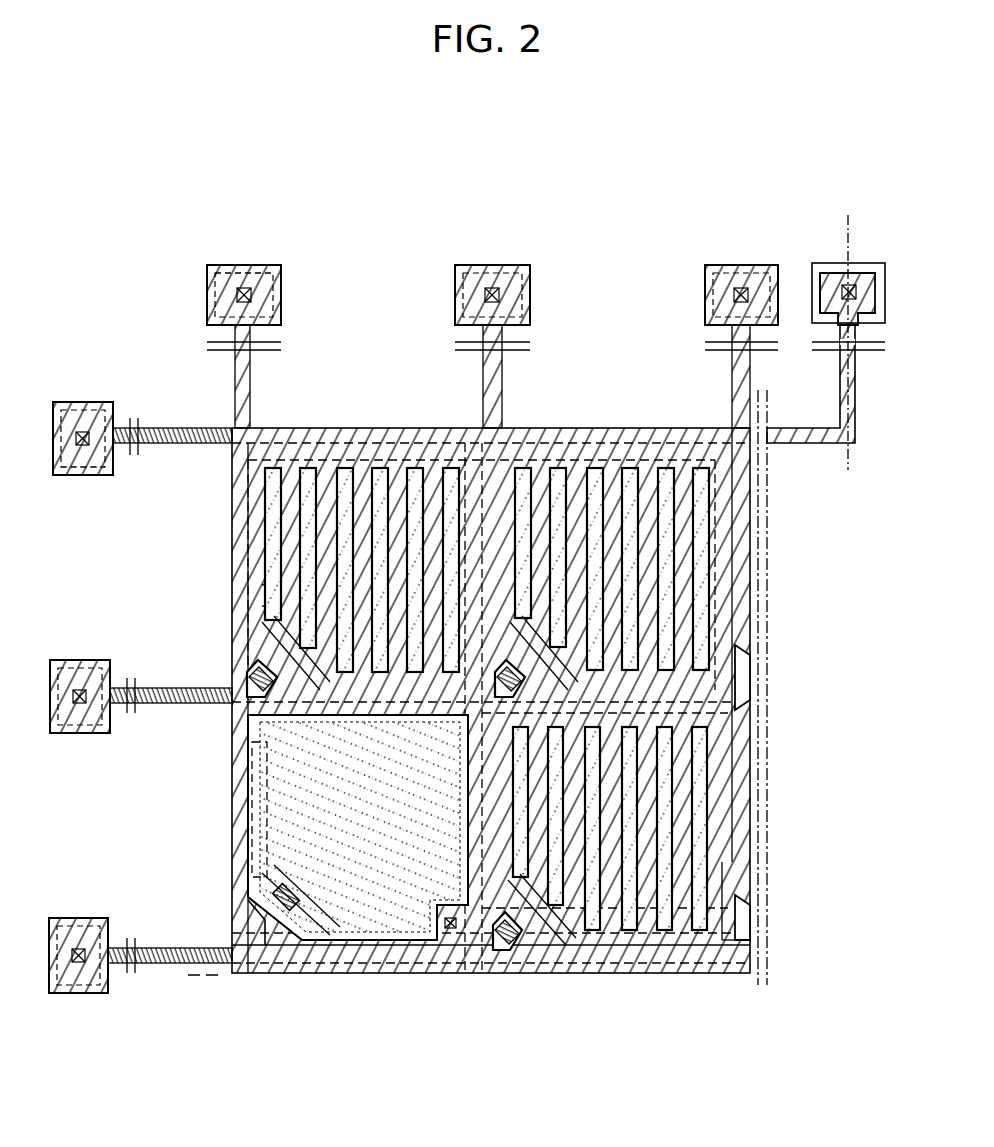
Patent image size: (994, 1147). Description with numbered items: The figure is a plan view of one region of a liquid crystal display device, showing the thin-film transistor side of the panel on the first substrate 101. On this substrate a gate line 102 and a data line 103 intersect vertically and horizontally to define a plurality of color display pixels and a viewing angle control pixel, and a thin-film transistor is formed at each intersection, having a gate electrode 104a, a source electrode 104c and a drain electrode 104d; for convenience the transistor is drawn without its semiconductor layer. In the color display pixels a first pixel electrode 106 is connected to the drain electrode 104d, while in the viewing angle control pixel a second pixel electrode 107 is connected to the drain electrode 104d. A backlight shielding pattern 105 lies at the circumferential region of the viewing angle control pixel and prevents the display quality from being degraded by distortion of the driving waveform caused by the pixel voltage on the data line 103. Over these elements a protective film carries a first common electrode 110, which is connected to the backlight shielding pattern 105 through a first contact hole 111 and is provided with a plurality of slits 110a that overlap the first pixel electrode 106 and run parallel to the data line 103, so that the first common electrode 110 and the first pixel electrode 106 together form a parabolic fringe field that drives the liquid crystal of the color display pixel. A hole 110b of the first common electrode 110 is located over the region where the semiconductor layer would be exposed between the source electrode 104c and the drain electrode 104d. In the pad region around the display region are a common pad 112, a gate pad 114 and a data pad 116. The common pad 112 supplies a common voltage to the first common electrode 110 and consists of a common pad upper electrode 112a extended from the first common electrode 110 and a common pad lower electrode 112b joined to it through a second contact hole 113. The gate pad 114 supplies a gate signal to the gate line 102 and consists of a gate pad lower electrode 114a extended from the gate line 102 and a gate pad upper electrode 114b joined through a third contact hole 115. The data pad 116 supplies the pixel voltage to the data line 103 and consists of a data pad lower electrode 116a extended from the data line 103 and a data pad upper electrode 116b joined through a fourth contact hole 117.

The first substrate 101 is at (150, 330).
The gate line 102 is at (185, 705).
The data line 103 is at (240, 828).
The gate electrode 104a is at (270, 937).
The source electrode 104c is at (230, 935).
The drain electrode 104d is at (258, 952).
The backlight shielding pattern 105 is at (252, 782).
The first pixel electrode 106 is at (346, 466).
The second pixel electrode 107 is at (395, 893).
The first common electrode 110 is at (255, 549).
The slits 110a is at (250, 599).
The hole 110b is at (232, 690).
The first contact hole 111 is at (457, 930).
The common pad 112 is at (838, 181).
The common pad upper electrode 112a is at (832, 273).
The common pad lower electrode 112b is at (808, 277).
The second contact hole 113 is at (865, 263).
The gate pad 114 is at (137, 570).
The gate pad lower electrode 114a is at (93, 478).
The gate pad upper electrode 114b is at (63, 478).
The third contact hole 115 is at (113, 452).
The data pad 116 is at (247, 198).
The data pad lower electrode 116a is at (258, 270).
The data pad upper electrode 116b is at (283, 273).
The fourth contact hole 117 is at (236, 267).